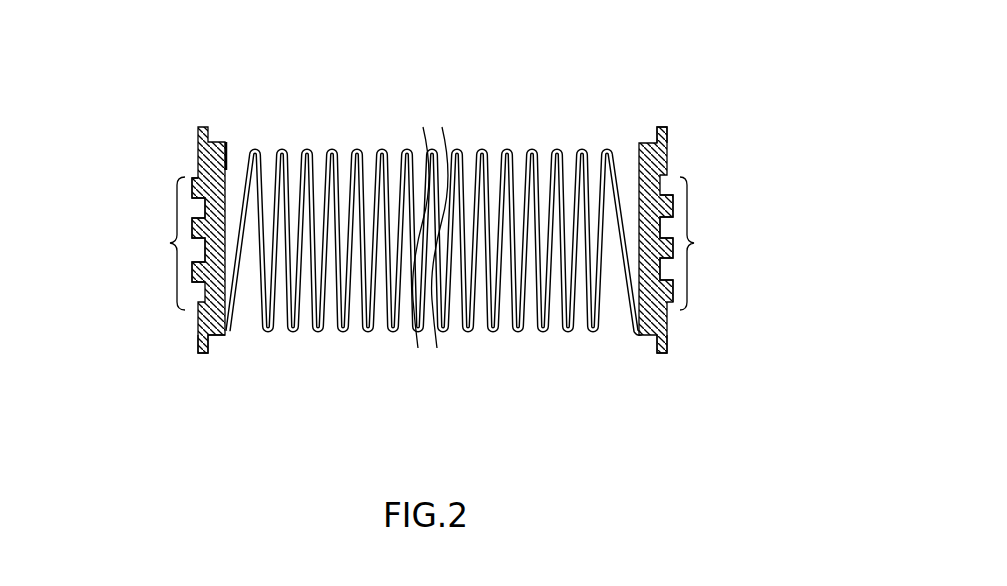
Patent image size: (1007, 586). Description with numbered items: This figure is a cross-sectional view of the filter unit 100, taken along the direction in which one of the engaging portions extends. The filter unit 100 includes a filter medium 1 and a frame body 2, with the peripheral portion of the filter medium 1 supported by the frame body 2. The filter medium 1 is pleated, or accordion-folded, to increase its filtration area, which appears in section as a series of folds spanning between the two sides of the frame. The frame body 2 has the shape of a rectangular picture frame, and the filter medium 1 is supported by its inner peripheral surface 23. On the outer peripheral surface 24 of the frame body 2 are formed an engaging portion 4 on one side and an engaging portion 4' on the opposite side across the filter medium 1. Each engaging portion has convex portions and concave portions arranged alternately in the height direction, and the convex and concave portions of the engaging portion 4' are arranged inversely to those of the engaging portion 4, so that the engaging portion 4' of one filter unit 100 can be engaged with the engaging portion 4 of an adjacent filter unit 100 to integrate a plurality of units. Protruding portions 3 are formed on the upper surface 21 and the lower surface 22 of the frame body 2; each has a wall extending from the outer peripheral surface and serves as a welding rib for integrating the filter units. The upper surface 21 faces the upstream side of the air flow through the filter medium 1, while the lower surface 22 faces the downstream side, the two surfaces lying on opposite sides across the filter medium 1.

The filter unit 100 is at (197, 45).
The filter medium 1 is at (511, 152).
The frame body 2 is at (706, 254).
The protruding portions 3 is at (665, 132).
The engaging portion 4 is at (689, 243).
The engaging portion 4' is at (165, 243).
The upper surface 21 is at (242, 243).
The lower surface 22 is at (215, 336).
The inner peripheral surface 23 is at (227, 162).
The outer peripheral surface 24 is at (193, 178).